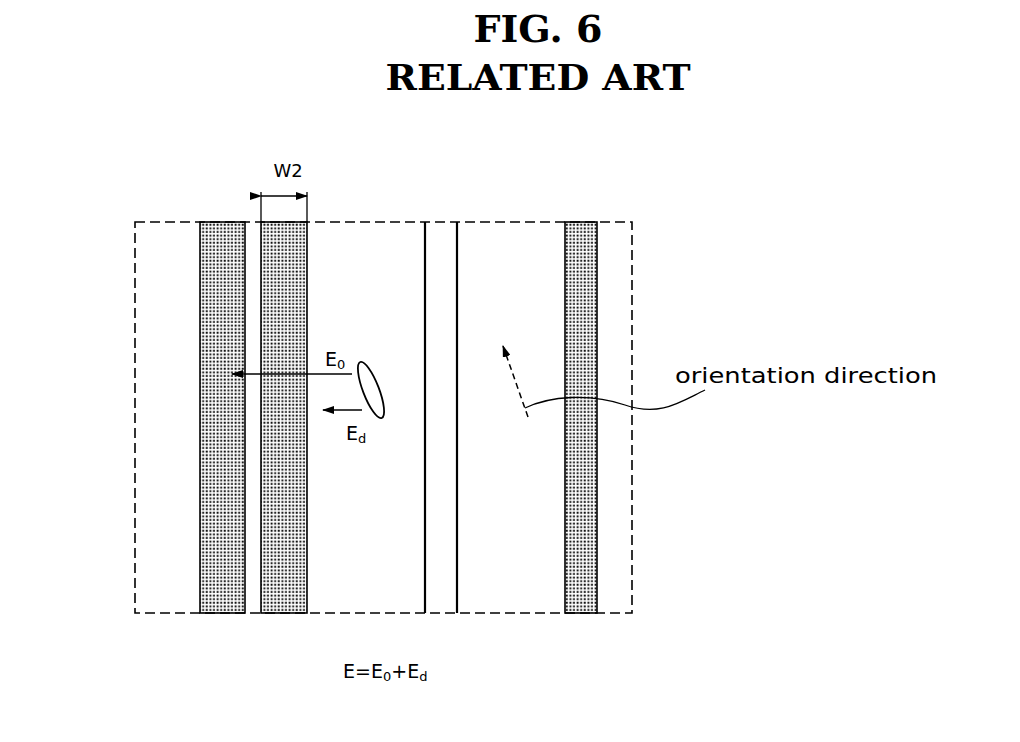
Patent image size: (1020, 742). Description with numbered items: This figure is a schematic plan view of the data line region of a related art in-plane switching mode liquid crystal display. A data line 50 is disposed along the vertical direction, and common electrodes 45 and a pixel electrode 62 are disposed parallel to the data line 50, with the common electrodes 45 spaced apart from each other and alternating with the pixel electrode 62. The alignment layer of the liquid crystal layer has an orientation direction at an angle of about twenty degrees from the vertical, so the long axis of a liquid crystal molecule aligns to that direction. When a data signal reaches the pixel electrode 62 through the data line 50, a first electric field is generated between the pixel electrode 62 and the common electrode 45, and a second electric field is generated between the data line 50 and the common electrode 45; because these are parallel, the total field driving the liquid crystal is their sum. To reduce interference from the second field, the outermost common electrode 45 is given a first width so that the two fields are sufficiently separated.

The data line 50 is at (213, 438).
The common electrodes 45 is at (283, 608).
The pixel electrode 62 is at (445, 603).